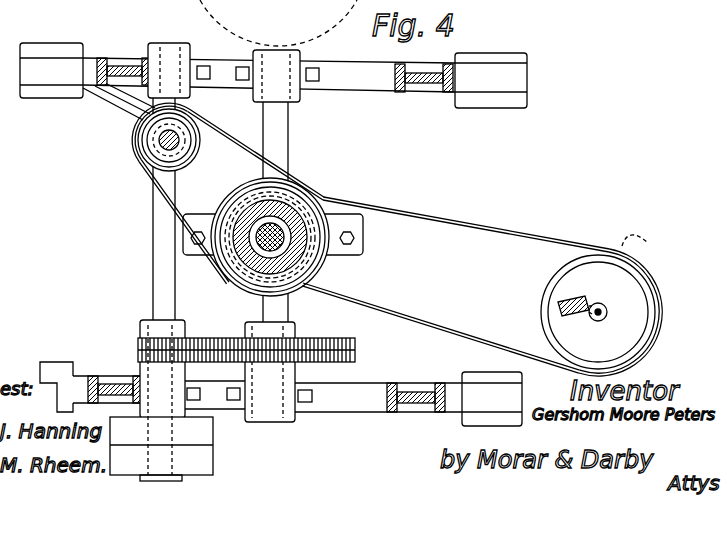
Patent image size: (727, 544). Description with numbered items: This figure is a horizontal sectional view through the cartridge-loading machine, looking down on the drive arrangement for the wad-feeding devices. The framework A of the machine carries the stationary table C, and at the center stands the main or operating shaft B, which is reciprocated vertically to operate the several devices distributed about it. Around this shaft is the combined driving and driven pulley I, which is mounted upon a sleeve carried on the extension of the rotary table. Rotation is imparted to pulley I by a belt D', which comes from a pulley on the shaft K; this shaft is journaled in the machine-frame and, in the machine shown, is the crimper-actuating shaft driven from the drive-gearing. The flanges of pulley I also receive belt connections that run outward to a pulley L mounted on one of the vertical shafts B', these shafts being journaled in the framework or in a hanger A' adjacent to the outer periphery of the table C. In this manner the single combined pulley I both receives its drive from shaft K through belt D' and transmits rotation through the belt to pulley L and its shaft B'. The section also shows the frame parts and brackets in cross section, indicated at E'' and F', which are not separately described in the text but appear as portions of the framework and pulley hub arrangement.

The framework A is at (273, 221).
The hanger A' is at (546, 297).
The main or operating shaft B is at (277, 236).
The vertical shafts B' is at (631, 301).
The stationary table C is at (397, 239).
The belt D' is at (193, 209).
The hatched ring of pulley B E'' is at (253, 254).
The bracket F' is at (286, 234).
The combined driving and driven pulley I is at (282, 250).
The shaft K is at (160, 147).
The pulley L is at (587, 295).